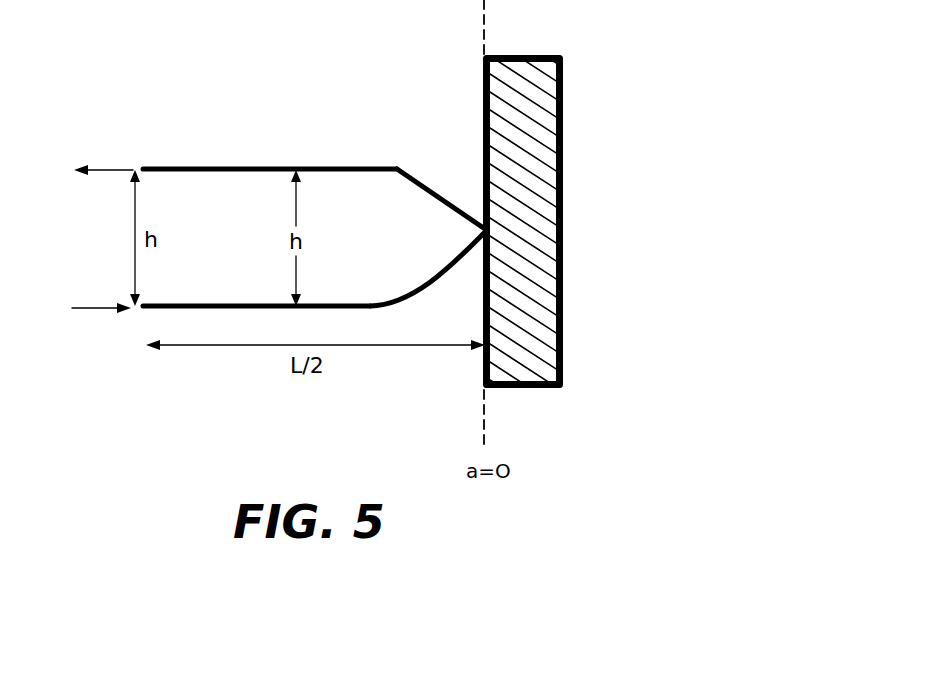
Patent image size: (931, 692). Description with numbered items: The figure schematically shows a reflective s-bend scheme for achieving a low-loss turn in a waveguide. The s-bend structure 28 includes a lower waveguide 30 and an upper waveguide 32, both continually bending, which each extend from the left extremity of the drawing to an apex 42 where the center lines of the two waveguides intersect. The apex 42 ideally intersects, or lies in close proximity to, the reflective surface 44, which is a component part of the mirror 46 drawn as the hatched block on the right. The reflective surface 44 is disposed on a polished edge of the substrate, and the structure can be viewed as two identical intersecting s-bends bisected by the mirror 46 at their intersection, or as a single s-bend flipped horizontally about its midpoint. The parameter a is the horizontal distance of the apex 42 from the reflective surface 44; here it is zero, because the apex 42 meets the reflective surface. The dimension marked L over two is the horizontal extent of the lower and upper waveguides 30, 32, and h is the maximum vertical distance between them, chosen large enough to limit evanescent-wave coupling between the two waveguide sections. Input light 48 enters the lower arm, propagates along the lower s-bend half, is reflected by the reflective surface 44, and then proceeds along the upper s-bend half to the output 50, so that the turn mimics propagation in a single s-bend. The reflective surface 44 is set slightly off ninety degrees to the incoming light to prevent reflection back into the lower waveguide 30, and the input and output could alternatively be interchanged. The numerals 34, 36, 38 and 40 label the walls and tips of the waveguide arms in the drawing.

The s-bend structure 28 is at (82, 90).
The lower waveguide 30 is at (249, 318).
The upper waveguide 32 is at (320, 144).
The lower wall 34 is at (214, 271).
The curved portion of lower wall 36 is at (404, 289).
The upper inner surface 38 is at (246, 172).
The upper wall tip 40 is at (436, 182).
The apex 42 is at (480, 246).
The reflective surface 44 is at (486, 42).
The mirror 46 is at (566, 132).
The input light 48 is at (82, 309).
The output 50 is at (83, 170).